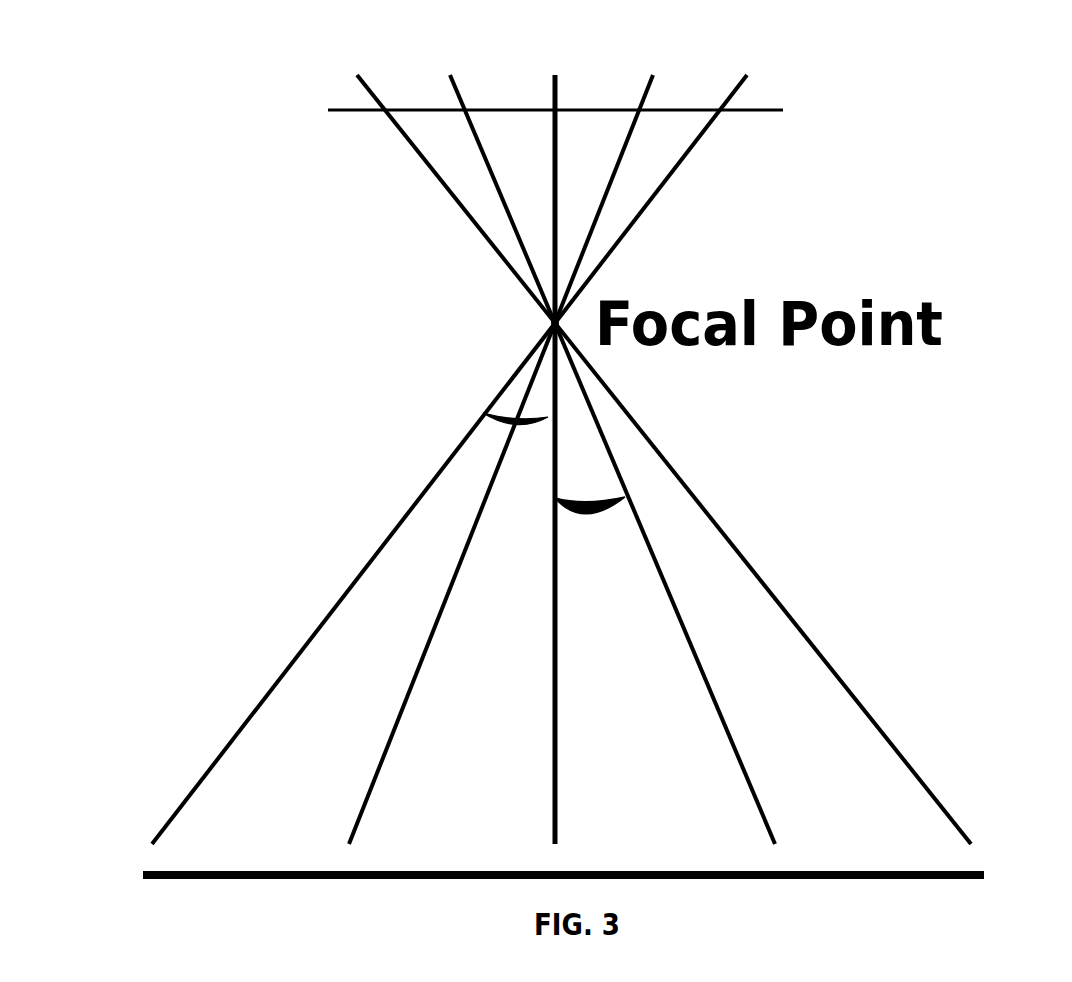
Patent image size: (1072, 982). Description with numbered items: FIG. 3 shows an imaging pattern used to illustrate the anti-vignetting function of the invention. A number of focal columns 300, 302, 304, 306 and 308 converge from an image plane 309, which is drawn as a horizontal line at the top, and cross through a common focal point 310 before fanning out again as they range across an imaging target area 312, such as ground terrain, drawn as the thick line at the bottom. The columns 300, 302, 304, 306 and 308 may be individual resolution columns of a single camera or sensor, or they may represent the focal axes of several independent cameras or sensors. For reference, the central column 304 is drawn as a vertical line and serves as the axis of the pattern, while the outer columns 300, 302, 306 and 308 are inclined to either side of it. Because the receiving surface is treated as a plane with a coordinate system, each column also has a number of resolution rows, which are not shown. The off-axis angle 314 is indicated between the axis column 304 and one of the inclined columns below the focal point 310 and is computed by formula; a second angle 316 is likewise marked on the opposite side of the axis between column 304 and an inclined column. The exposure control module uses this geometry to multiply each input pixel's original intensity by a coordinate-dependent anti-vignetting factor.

The focal column 300 is at (650, 434).
The focal column 302 is at (604, 434).
The focal column serving as axis 304 is at (557, 434).
The focal column 306 is at (515, 434).
The focal column 308 is at (468, 434).
The image plane 309 is at (583, 98).
The focal point 310 is at (520, 327).
The imaging target area 312 is at (594, 865).
The off-axis angle 314 is at (595, 515).
The angle of ray 308 relative to axis 316 is at (510, 428).